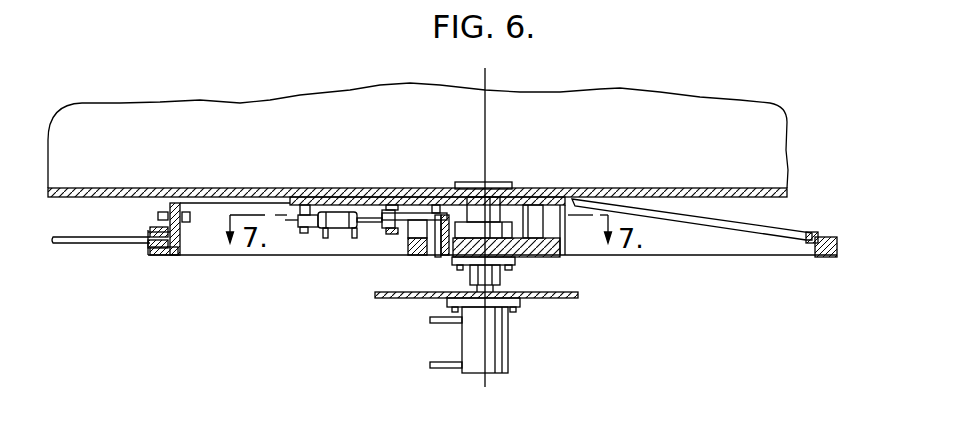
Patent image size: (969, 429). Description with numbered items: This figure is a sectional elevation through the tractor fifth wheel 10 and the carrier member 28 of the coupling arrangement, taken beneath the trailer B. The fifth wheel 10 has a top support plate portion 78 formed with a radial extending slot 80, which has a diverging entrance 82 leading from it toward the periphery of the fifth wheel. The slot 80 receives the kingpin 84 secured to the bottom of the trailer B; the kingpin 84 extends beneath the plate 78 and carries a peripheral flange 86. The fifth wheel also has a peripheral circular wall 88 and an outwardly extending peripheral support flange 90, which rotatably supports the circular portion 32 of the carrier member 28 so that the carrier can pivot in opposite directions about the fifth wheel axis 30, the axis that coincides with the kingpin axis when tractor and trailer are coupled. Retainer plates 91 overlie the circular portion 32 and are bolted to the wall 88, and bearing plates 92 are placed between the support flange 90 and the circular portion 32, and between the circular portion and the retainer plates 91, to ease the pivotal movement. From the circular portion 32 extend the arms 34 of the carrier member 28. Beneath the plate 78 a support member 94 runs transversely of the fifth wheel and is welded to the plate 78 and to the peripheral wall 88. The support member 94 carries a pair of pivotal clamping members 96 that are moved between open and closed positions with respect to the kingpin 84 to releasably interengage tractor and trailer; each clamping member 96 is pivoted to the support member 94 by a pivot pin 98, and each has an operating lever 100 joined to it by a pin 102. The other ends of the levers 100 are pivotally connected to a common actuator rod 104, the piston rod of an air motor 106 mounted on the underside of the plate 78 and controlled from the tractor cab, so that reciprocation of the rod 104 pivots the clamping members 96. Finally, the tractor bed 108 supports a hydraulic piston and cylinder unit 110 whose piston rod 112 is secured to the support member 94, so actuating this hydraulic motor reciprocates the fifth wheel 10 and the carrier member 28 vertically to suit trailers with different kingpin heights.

The trailer B is at (707, 88).
The fifth wheel 10 is at (268, 292).
The carrier member 28 is at (135, 224).
The fifth wheel axis 30 is at (485, 118).
The circular portion 32 is at (826, 240).
The arms 34 is at (73, 246).
The top support plate portion 78 is at (250, 197).
The radial extending slot 80 is at (557, 200).
The diverging entrance 82 is at (733, 222).
The kingpin 84 is at (498, 200).
The peripheral flange 86 is at (470, 227).
The peripheral circular wall 88 is at (180, 228).
The peripheral support flange 90 is at (155, 247).
The retainer plates 91 is at (150, 197).
The bearing plates 92 is at (150, 233).
The support member 94 is at (548, 257).
The clamping members 96 is at (523, 218).
The pivot pin 98 is at (437, 255).
The operating lever 100 is at (415, 213).
The pin 102 is at (438, 213).
The actuator rod 104 is at (372, 212).
The air motor 106 is at (347, 213).
The bed 108 is at (420, 300).
The hydraulic piston and cylinder unit 110 is at (514, 336).
The piston rod 112 is at (415, 304).